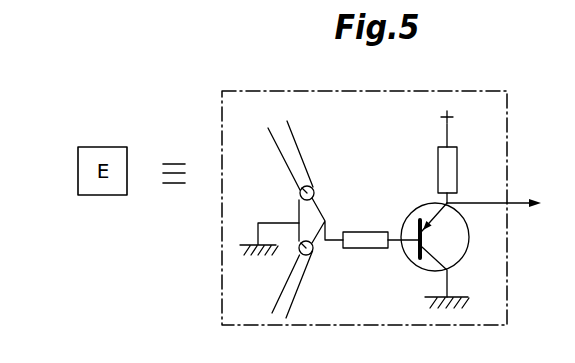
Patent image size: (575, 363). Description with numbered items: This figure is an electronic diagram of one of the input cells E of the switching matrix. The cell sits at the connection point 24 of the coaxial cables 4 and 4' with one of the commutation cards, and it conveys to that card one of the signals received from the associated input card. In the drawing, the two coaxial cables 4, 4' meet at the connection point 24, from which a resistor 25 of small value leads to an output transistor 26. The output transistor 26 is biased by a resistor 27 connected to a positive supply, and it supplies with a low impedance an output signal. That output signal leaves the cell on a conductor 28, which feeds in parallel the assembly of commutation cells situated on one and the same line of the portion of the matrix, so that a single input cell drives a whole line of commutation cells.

The coaxial cable 4 is at (297, 149).
The coaxial cable 4' is at (311, 284).
The connection point 24 is at (332, 212).
The resistor 25 is at (365, 235).
The output transistor 26 is at (462, 234).
The resistor 27 is at (450, 165).
The conductor 28 is at (515, 201).